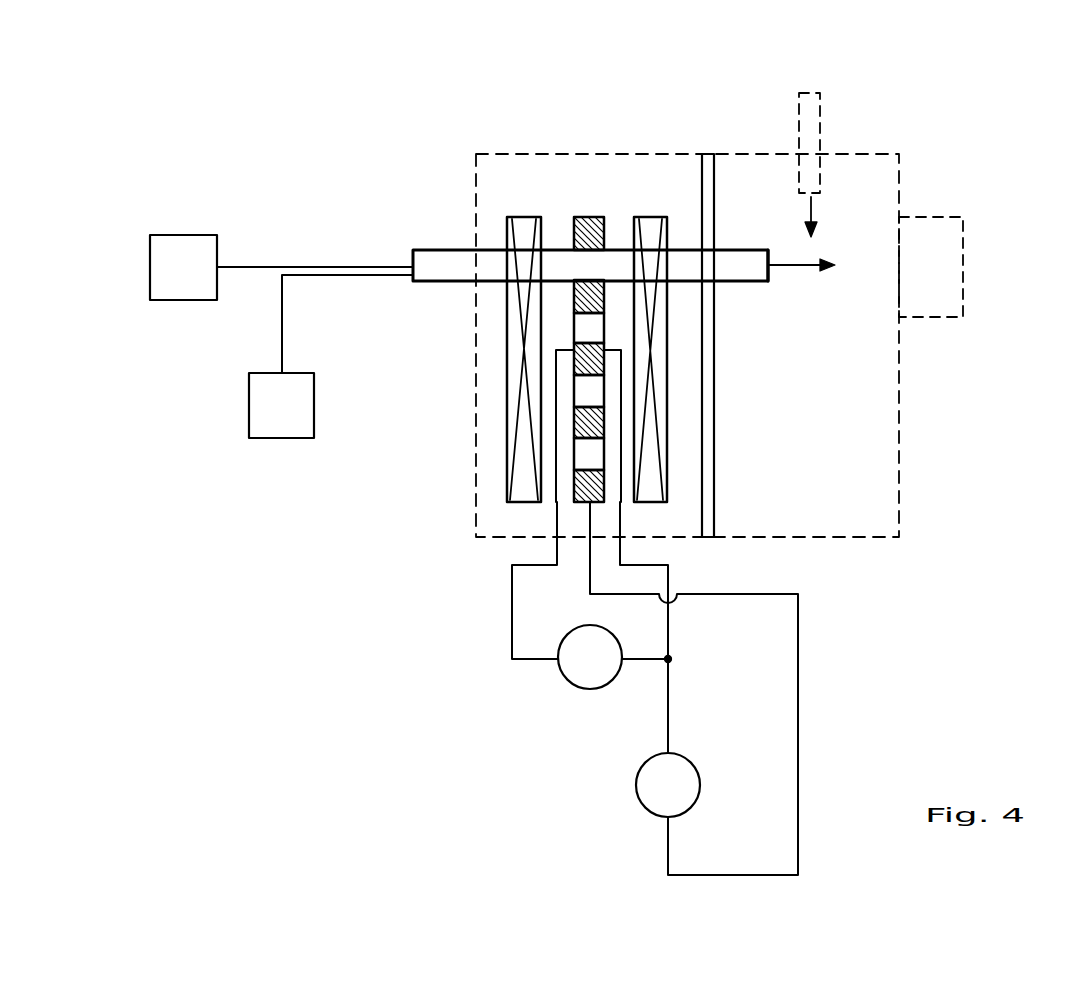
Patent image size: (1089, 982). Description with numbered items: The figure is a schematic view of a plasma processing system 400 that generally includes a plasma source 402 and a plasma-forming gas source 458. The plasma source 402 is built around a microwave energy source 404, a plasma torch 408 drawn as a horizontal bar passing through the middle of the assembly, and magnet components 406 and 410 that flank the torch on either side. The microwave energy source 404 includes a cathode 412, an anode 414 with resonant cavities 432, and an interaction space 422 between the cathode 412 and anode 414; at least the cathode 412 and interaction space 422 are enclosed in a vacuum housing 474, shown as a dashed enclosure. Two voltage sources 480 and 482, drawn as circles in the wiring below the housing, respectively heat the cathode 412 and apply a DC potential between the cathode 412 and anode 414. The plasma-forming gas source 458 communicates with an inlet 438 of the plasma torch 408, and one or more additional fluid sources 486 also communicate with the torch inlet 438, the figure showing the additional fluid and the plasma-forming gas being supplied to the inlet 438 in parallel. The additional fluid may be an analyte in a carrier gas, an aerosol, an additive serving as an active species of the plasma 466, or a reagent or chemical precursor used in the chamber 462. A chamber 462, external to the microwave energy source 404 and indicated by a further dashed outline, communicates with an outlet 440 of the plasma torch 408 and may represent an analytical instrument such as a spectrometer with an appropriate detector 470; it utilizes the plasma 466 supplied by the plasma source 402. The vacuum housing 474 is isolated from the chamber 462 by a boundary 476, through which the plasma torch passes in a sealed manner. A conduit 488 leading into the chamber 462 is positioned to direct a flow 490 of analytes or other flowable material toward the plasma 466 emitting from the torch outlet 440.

The plasma processing system 400 is at (186, 122).
The plasma source 402 is at (593, 140).
The microwave energy source 404 is at (496, 512).
The magnet component 406 is at (505, 402).
The plasma torch 408 is at (427, 232).
The magnet component 410 is at (670, 415).
The cathode 412 is at (575, 360).
The anode 414 is at (585, 217).
The interaction space 422 is at (610, 395).
The resonant cavities 432 is at (610, 460).
The inlet 438 is at (412, 258).
The outlet 440 is at (768, 250).
The plasma-forming gas source 458 is at (249, 400).
The chamber 462 is at (898, 165).
The plasma 466 is at (808, 268).
The detector 470 is at (963, 265).
The vacuum housing 474 is at (502, 154).
The boundary 476 is at (710, 154).
The voltage source 480 is at (563, 680).
The voltage source 482 is at (640, 783).
The fluid source 486 is at (168, 235).
The conduit 488 is at (820, 108).
The flow 490 is at (812, 215).